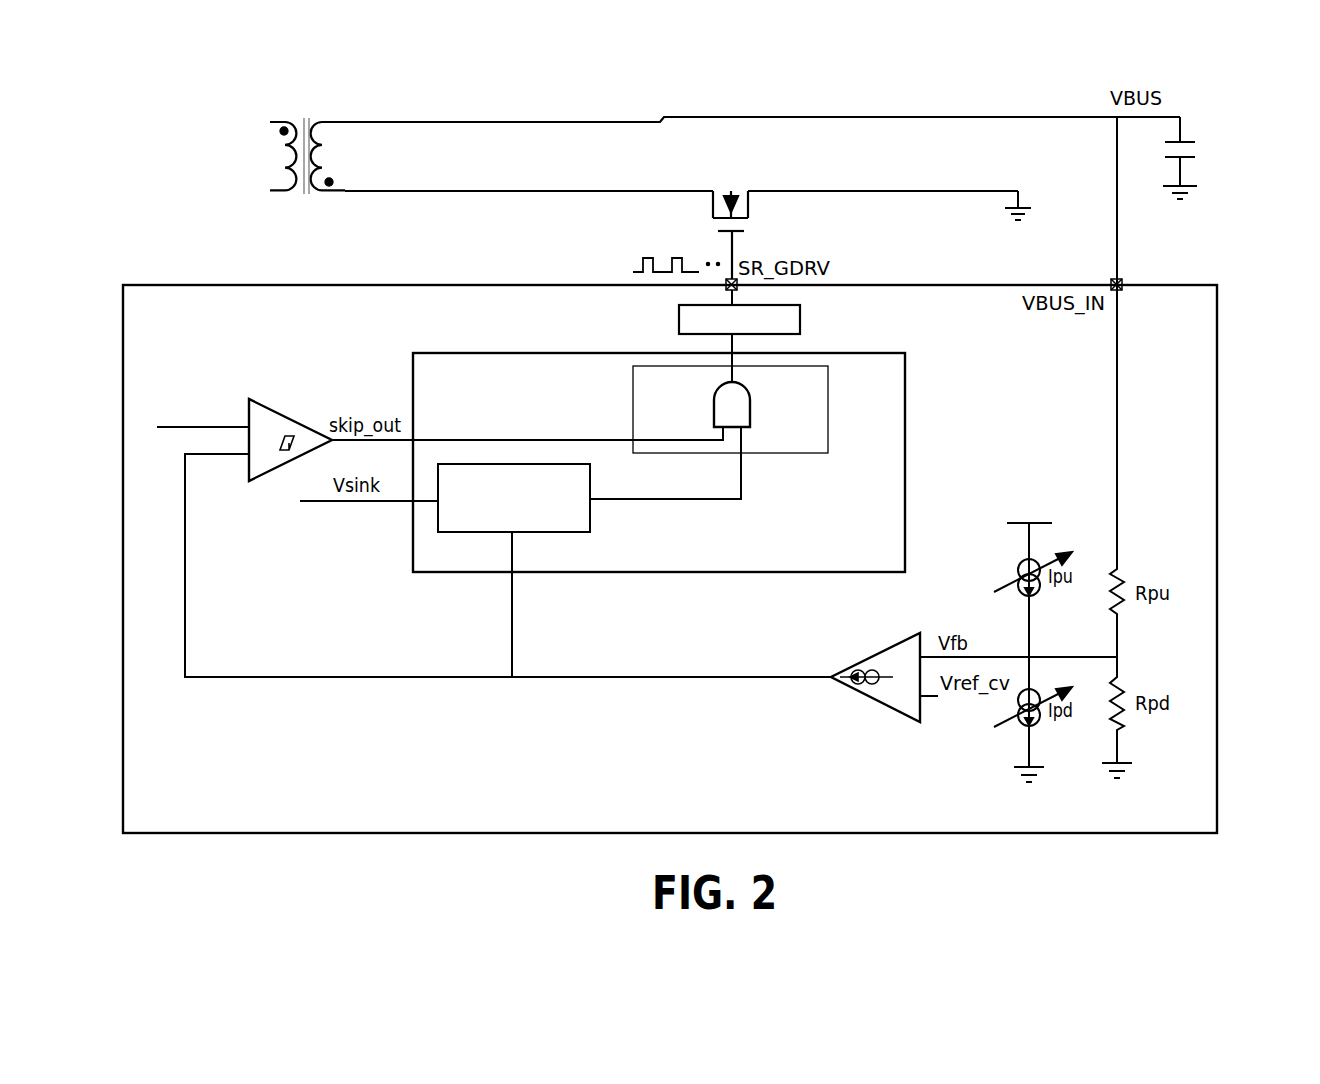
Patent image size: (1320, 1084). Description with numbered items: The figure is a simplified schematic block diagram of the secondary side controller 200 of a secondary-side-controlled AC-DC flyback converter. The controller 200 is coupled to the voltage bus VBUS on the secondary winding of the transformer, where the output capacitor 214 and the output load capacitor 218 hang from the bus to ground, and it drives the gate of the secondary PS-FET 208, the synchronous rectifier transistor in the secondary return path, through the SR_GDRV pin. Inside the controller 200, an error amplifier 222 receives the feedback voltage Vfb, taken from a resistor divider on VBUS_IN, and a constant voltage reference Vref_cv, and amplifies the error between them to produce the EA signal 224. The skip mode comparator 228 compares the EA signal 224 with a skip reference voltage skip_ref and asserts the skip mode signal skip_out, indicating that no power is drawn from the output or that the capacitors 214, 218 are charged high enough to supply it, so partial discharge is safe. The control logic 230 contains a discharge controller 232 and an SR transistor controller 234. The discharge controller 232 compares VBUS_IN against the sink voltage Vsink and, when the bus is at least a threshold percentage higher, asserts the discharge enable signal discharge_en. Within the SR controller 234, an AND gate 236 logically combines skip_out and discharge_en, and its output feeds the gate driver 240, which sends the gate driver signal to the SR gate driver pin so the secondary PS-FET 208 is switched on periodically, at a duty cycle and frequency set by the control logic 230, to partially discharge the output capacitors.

The secondary side controller 200 is at (670, 559).
The secondary PS-FET 208 is at (711, 217).
The output capacitor 214 is at (1222, 156).
The output load capacitor 218 is at (1192, 142).
The error amplifier 222 is at (883, 705).
The EA signal 224 is at (727, 673).
The skip mode comparator 228 is at (276, 411).
The control logic 230 is at (659, 453).
The discharge controller 232 is at (438, 520).
The SR transistor controller 234 is at (769, 409).
The AND gate 236 is at (714, 398).
The gate driver 240 is at (800, 318).